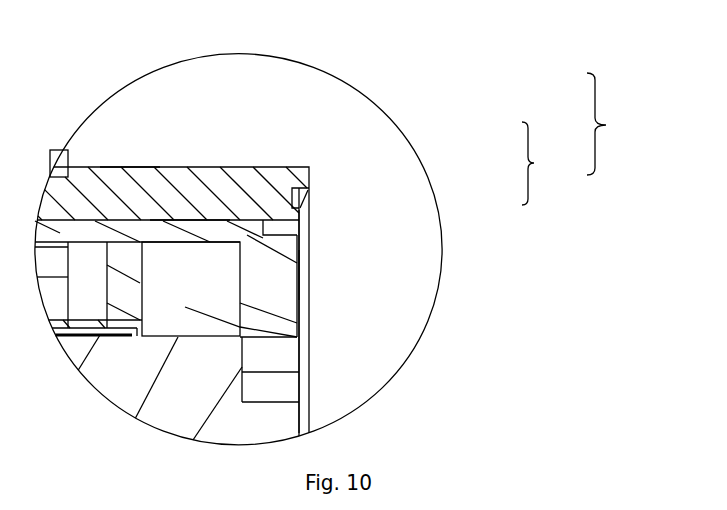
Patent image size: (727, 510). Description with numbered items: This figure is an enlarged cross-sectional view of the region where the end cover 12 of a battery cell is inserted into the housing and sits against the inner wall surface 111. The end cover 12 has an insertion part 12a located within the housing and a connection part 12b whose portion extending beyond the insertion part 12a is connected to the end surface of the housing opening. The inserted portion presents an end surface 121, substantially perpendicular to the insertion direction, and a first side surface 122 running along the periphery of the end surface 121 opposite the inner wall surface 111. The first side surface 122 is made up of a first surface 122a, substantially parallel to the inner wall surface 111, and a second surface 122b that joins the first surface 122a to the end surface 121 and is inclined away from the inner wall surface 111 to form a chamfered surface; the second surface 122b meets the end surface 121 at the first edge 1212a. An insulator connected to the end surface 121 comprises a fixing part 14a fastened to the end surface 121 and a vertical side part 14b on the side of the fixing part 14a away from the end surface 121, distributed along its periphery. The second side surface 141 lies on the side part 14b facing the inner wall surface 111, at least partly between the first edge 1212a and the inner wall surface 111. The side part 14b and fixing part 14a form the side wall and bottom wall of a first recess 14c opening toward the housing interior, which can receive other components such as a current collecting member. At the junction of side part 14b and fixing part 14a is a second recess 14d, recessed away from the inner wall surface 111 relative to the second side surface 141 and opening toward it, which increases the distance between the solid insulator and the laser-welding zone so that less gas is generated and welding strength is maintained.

The end cover 12 is at (337, 253).
The end surface 121 is at (309, 145).
The first side surface 122 is at (439, 277).
The first surface 122a is at (404, 163).
The second surface 122b is at (404, 243).
The first edge 1212a is at (391, 231).
The insertion part 12a is at (190, 119).
The connection part 12b is at (130, 99).
The fixing part 14a is at (272, 285).
The side part 14b is at (367, 294).
The first recess 14c is at (366, 369).
The second recess 14d is at (266, 249).
The second side surface 141 is at (396, 295).
The inner wall surface 111 is at (287, 388).